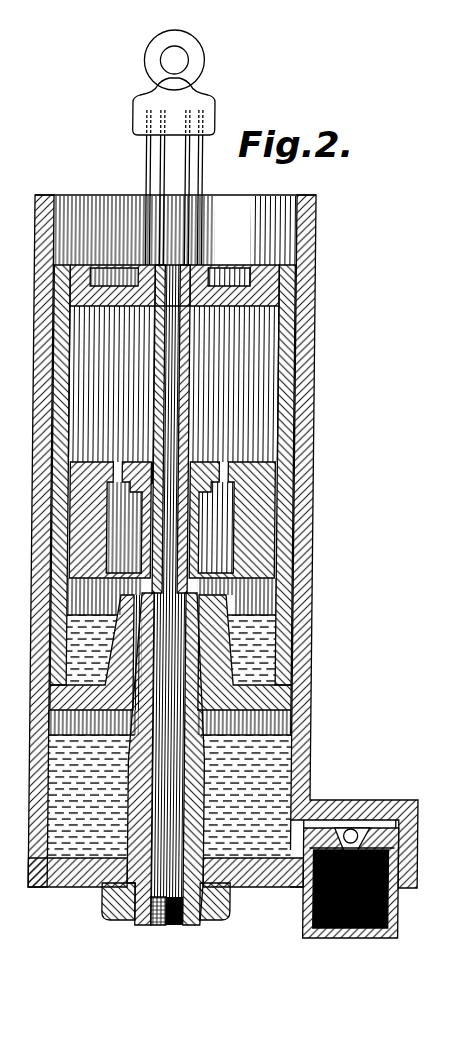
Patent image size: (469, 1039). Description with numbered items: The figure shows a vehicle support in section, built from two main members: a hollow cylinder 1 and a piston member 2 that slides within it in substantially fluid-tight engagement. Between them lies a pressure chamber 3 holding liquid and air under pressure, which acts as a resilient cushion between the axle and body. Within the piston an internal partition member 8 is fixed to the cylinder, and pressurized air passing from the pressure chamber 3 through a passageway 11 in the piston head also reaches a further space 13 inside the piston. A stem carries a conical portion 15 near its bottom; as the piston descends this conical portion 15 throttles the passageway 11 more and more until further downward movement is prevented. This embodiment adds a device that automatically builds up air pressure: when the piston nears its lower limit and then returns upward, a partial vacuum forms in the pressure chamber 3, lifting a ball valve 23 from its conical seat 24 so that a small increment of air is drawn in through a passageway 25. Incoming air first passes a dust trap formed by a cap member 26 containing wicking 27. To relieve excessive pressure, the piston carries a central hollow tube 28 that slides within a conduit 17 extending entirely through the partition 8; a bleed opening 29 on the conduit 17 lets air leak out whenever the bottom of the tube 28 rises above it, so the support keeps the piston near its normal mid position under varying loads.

The hollow cylinder 1 is at (305, 310).
The piston member 2 is at (287, 377).
The pressure chamber 3 is at (270, 720).
The internal partition member 8 is at (237, 477).
The passageway 11 is at (203, 647).
The space within the piston 13 is at (242, 358).
The conical portion 15 is at (197, 842).
The conduit 17 is at (137, 885).
The ball valve 23 is at (353, 830).
The conical seat 24 is at (337, 832).
The passageway 25 is at (298, 862).
The cap member 26 is at (370, 937).
The wicking 27 is at (328, 937).
The central hollow tube 28 is at (182, 406).
The bleed opening 29 is at (150, 468).